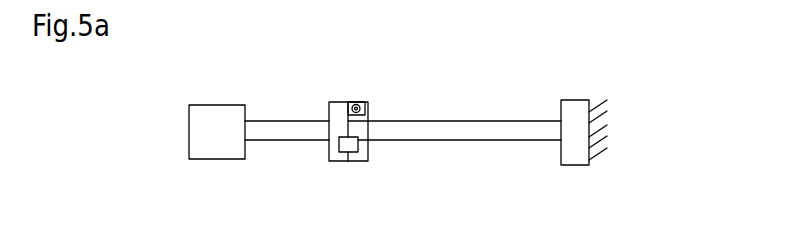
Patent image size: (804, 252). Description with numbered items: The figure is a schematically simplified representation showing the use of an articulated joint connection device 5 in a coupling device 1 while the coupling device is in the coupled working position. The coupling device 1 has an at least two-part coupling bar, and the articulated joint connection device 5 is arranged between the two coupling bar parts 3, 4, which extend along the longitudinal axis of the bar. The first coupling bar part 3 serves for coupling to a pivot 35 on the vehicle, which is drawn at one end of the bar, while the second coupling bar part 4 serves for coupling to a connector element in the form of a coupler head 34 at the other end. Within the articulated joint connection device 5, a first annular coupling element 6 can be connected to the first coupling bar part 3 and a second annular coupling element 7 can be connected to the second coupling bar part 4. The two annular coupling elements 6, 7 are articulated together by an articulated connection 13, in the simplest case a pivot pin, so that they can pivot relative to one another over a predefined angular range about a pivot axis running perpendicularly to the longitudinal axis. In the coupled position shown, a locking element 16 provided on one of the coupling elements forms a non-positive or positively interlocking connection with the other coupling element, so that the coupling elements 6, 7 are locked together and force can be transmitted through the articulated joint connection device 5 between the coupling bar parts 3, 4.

The coupling device 1 is at (450, 70).
The first coupling bar part 3 is at (513, 120).
The second coupling bar part 4 is at (283, 130).
The articulated joint connection device 5 is at (335, 168).
The first annular coupling element 6 is at (355, 126).
The second annular coupling element 7 is at (337, 110).
The articulated connection 13 is at (356, 104).
The locking element 16 is at (356, 146).
The coupler head 34 is at (213, 120).
The pivot 35 is at (575, 115).